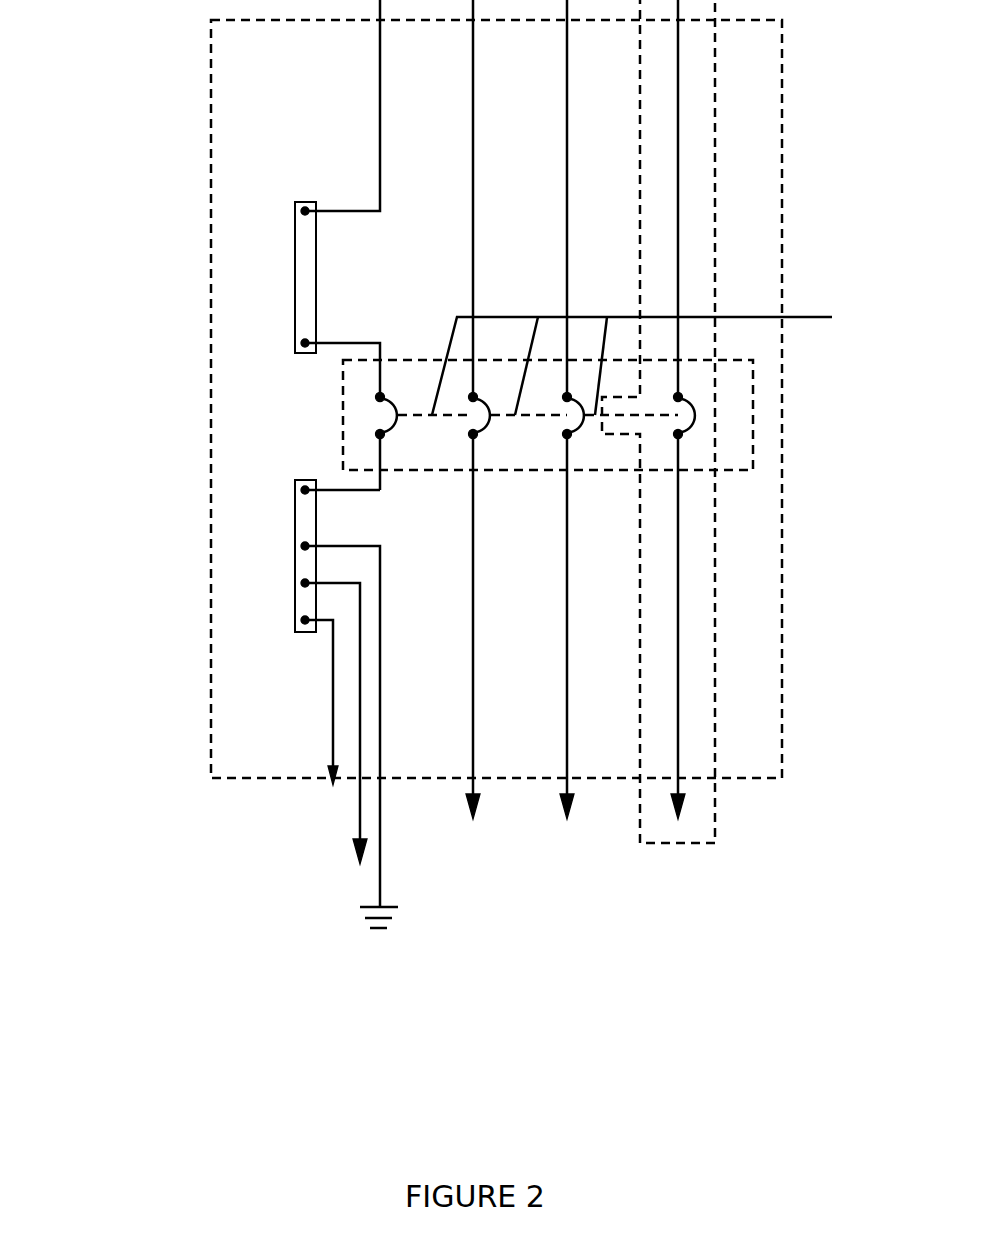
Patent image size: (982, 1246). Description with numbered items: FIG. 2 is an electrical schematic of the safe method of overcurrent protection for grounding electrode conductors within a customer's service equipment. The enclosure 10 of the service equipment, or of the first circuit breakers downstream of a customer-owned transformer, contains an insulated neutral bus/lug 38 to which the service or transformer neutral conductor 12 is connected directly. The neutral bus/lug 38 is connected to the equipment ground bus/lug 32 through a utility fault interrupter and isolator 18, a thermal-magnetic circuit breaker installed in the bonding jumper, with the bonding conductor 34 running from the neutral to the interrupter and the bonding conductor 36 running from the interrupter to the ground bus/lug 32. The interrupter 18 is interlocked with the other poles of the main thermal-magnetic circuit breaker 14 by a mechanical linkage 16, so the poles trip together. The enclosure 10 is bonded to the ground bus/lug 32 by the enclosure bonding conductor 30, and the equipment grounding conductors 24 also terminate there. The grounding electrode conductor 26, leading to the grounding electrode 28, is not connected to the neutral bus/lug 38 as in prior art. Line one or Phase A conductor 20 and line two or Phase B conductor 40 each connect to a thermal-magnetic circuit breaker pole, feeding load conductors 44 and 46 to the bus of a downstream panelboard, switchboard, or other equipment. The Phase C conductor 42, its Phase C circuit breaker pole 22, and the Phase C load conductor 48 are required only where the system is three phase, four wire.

The enclosure 10 is at (418, 399).
The neutral conductor 12 is at (340, 105).
The main thermal-magnetic circuit breaker 14 is at (609, 415).
The mechanical linkage/handle tie 16 is at (653, 358).
The utility fault interrupter and isolator 18 is at (416, 449).
The Line No. 1 conductor 20 is at (446, 219).
The Phase C thermal-magnetic circuit breaker pole 22 is at (737, 421).
The equipment grounding conductors 24 is at (242, 723).
The grounding electrode conductor 26 is at (248, 726).
The grounding electrode 28 is at (447, 961).
The enclosure bonding conductor 30 is at (227, 702).
The equipment ground bus/lug 32 is at (273, 589).
The bonding conductor between neutral and utility fault interrupter and isolator 34 is at (360, 277).
The bonding conductor between equipment ground bus/lug and utility fault interrupter 36 is at (305, 462).
The insulated neutral bus/lug 38 is at (304, 379).
The Line No. 2 conductor 40 is at (537, 219).
The Phase C conductor 42 is at (641, 219).
The Line No. 1 load conductor/bus 44 is at (507, 626).
The Line No. 2 load conductor/bus 46 is at (597, 626).
The Phase C load conductor 48 is at (642, 626).